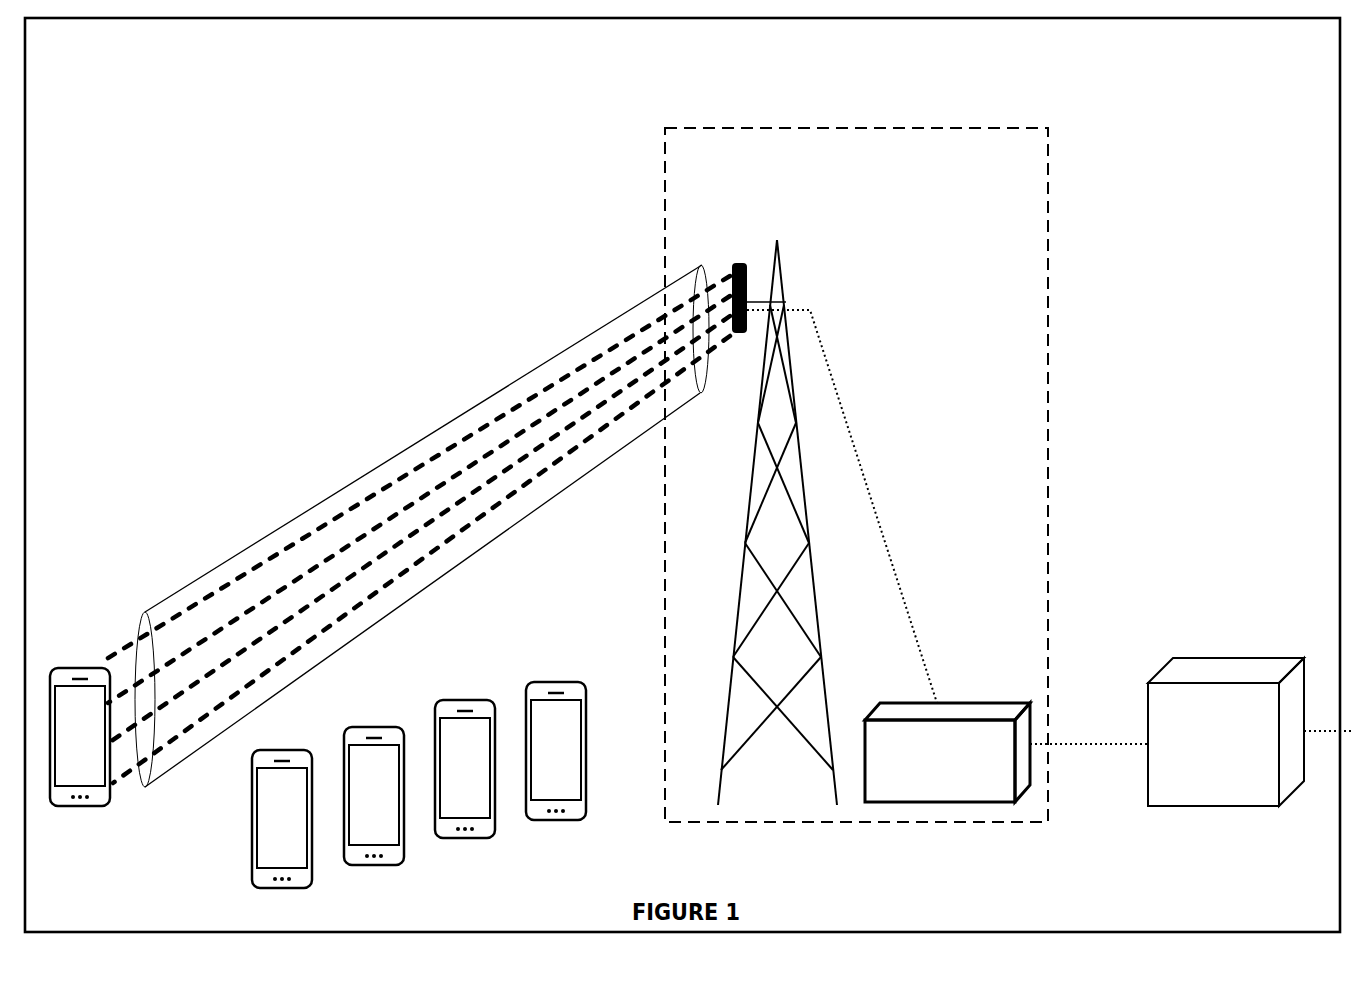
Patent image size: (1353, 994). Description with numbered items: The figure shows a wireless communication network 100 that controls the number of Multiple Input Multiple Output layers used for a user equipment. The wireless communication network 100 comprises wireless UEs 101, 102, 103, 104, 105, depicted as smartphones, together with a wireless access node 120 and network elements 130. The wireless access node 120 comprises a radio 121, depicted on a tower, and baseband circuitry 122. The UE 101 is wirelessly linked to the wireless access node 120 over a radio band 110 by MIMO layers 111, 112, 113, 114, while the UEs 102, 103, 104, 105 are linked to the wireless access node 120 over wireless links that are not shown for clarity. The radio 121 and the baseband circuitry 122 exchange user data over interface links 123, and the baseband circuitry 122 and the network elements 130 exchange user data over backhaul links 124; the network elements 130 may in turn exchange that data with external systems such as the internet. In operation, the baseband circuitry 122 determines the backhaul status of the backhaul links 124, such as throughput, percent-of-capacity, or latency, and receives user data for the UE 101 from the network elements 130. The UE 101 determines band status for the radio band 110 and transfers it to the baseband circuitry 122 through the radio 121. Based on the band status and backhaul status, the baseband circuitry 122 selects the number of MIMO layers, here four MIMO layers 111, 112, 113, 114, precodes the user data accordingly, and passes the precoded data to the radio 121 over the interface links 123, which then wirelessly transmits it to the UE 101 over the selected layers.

The wireless communication network 100 is at (900, 48).
The user equipment 101 is at (65, 733).
The user equipment 102 is at (267, 815).
The user equipment 103 is at (359, 792).
The user equipment 104 is at (450, 765).
The user equipment 105 is at (541, 747).
The radio band 110 is at (610, 323).
The MIMO layer 111 is at (440, 457).
The MIMO layer 112 is at (340, 552).
The MIMO layer 113 is at (292, 613).
The MIMO layer 114 is at (368, 596).
The wireless access node 120 is at (1013, 162).
The radio 121 is at (734, 263).
The baseband circuitry 122 is at (947, 752).
The interface links 123 is at (867, 487).
The backhaul links 124 is at (1098, 744).
The network elements 130 is at (1250, 732).